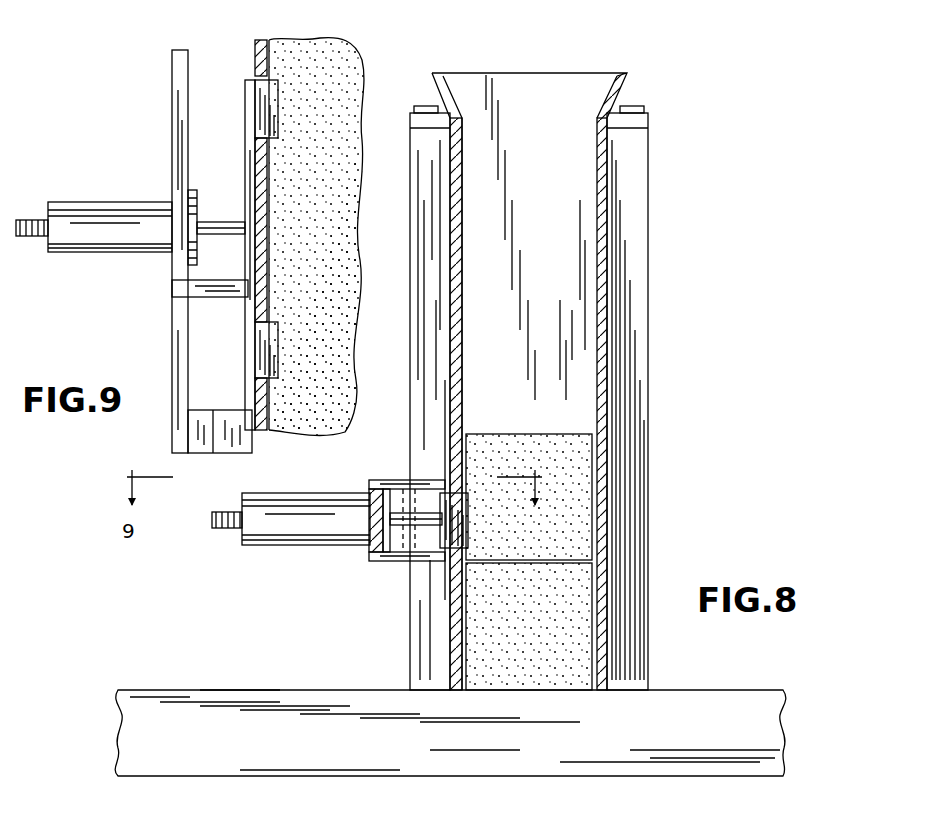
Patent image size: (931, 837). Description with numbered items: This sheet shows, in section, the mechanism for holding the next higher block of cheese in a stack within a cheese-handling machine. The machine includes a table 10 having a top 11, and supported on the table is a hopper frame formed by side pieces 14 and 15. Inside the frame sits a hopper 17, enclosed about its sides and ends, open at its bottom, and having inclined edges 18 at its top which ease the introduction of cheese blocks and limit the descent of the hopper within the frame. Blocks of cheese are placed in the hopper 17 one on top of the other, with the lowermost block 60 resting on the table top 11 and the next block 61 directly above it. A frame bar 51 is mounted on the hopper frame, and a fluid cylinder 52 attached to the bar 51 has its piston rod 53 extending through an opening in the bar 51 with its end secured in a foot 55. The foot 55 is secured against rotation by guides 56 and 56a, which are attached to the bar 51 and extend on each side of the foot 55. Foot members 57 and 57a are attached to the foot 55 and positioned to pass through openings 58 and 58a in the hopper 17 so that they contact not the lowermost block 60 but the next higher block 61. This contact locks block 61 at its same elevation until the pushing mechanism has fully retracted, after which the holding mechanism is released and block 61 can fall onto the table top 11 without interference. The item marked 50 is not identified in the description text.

In FIG. 8, the table 10 is at (450, 733).
In FIG. 8, the top 11 is at (215, 688).
In FIG. 8, the side piece 14 is at (436, 381).
In FIG. 8, the side piece 15 is at (627, 398).
In FIG. 8, the hopper 17 is at (608, 220).
In FIG. 8, the inclined edges 18 is at (628, 90).
In FIG. 9, the threaded adjusting rod 50 is at (70, 256).
In FIG. 8, the threaded adjusting rod 50 is at (290, 550).
In FIG. 9, the frame bar 51 is at (178, 330).
In FIG. 8, the frame bar 51 is at (376, 520).
In FIG. 9, the fluid cylinder 52 is at (126, 255).
In FIG. 8, the fluid cylinder 52 is at (292, 495).
In FIG. 9, the piston rod 53 is at (222, 226).
In FIG. 8, the piston rod 53 is at (432, 548).
In FIG. 9, the foot 55 is at (250, 156).
In FIG. 9, the guide 56 is at (222, 297).
In FIG. 8, the guide 56 is at (400, 484).
In FIG. 8, the guide 56a is at (396, 562).
In FIG. 9, the foot member 57 is at (268, 345).
In FIG. 8, the foot member 57 is at (464, 525).
In FIG. 9, the foot member 57a is at (262, 90).
In FIG. 9, the opening 58 is at (268, 322).
In FIG. 8, the opening 58 is at (455, 495).
In FIG. 9, the opening 58a is at (268, 138).
In FIG. 8, the block 60 is at (529, 626).
In FIG. 8, the block 61 is at (529, 497).